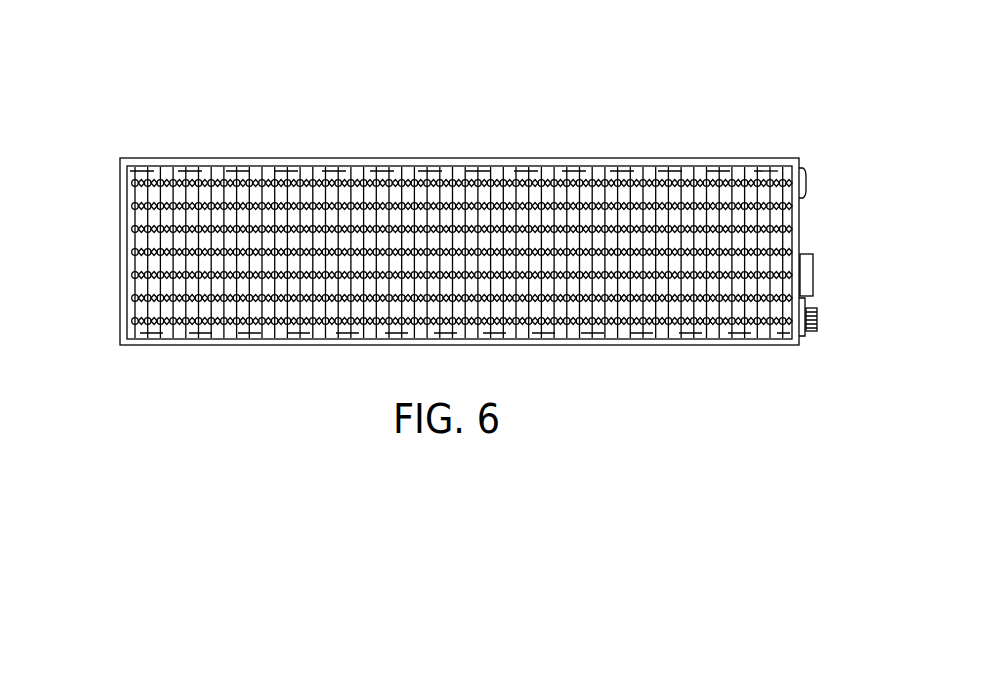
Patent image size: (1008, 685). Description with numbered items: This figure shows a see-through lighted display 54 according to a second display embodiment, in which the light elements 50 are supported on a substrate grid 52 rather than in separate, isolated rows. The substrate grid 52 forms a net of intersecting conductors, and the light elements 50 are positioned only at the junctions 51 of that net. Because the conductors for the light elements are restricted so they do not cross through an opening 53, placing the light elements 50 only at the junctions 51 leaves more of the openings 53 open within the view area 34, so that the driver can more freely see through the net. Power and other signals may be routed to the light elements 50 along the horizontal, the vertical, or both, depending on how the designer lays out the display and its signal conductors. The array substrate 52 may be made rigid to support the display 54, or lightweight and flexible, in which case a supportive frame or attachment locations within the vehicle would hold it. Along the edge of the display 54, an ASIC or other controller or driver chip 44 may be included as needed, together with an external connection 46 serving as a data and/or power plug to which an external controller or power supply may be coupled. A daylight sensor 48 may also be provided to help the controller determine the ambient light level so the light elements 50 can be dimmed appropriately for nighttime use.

The display 54 is at (779, 106).
The light elements 50 is at (592, 183).
The substrate grid 52 is at (128, 202).
The opening 53 is at (303, 196).
The junctions 51 is at (128, 260).
The view area 34 is at (244, 330).
The daylight sensor 48 is at (802, 173).
The controller or driver chip 44 is at (813, 257).
The external connection 46 is at (806, 306).